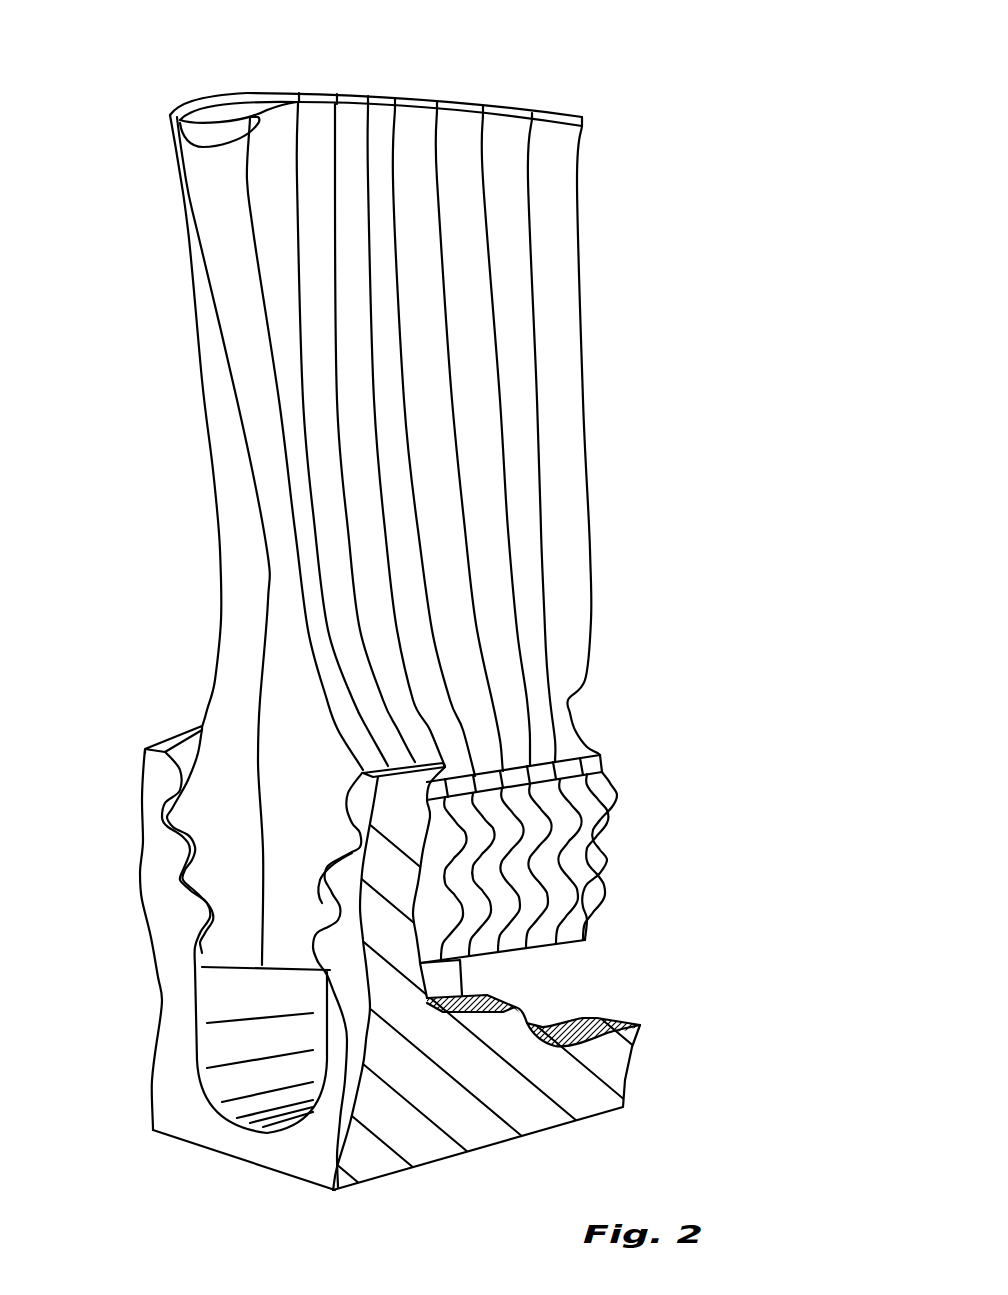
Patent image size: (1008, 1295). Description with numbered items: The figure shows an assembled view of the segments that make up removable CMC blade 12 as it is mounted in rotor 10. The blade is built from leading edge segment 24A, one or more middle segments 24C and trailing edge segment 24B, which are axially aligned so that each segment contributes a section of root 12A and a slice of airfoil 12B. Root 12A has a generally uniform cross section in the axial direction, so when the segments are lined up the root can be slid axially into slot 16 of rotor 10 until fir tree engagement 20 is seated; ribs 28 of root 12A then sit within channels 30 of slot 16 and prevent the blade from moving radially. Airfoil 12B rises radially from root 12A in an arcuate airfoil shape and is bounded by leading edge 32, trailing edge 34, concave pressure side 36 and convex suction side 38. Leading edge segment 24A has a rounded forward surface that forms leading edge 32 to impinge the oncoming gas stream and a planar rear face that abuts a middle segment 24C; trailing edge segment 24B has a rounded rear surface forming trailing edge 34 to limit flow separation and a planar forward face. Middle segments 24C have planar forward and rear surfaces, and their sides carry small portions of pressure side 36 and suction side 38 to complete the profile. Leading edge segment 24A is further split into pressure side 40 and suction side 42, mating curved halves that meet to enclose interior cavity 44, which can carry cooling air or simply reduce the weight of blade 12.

The rotor 10 is at (450, 1125).
The removable CMC blade 12 is at (600, 203).
The root 12A is at (614, 883).
The airfoil 12B is at (619, 535).
The slot 16 is at (210, 1003).
The fir tree engagement 20 is at (339, 928).
The leading edge segment 24A is at (221, 451).
The trailing edge segment 24B is at (566, 420).
The middle segments 24C is at (428, 80).
The ribs 28 is at (607, 790).
The channels 30 is at (188, 853).
The leading edge 32 is at (170, 114).
The trailing edge 34 is at (583, 117).
The concave pressure side 36 is at (180, 137).
The convex suction side 38 is at (317, 102).
The pressure side 40 is at (277, 652).
The suction side 42 is at (247, 568).
The interior cavity 44 is at (217, 108).